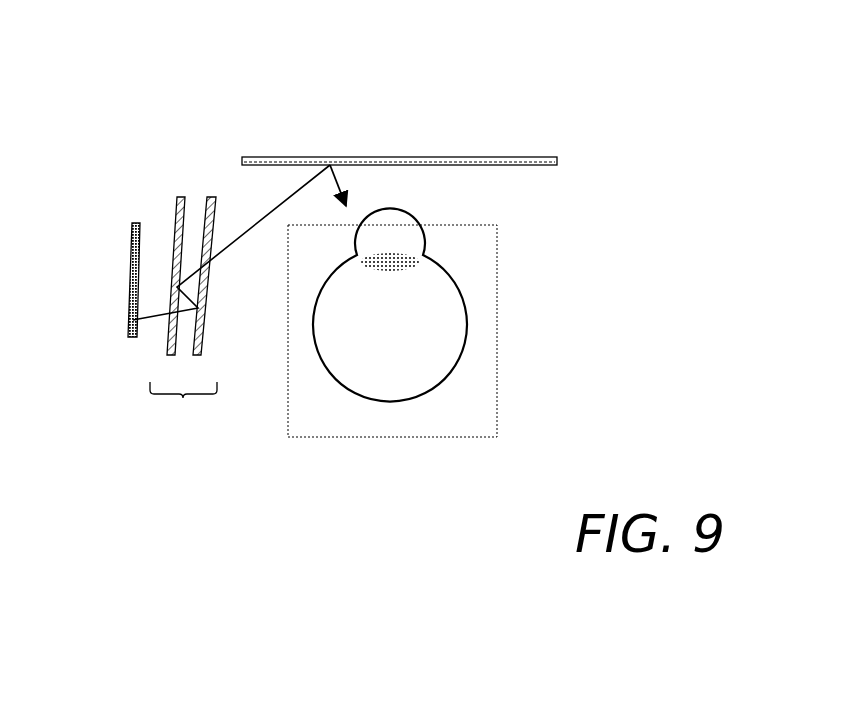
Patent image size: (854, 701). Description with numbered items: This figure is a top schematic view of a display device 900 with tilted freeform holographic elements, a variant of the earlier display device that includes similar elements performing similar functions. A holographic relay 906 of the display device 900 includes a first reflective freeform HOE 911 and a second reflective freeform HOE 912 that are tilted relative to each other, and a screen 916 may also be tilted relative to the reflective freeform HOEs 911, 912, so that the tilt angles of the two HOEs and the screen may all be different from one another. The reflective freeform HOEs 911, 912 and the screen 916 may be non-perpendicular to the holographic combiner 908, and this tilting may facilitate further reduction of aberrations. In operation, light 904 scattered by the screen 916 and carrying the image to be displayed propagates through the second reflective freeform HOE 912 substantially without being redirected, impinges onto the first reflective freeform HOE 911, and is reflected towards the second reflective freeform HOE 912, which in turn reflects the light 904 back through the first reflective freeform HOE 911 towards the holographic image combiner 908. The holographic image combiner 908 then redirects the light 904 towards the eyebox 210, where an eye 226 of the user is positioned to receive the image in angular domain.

The display device 900 is at (94, 102).
The light 904 is at (243, 239).
The holographic relay 906 is at (183, 409).
The holographic image combiner 908 is at (362, 157).
The first reflective freeform HOE 911 is at (212, 195).
The second reflective freeform HOE 912 is at (180, 195).
The screen 916 is at (129, 240).
The eyebox 210 is at (486, 422).
The eye 226 is at (467, 322).